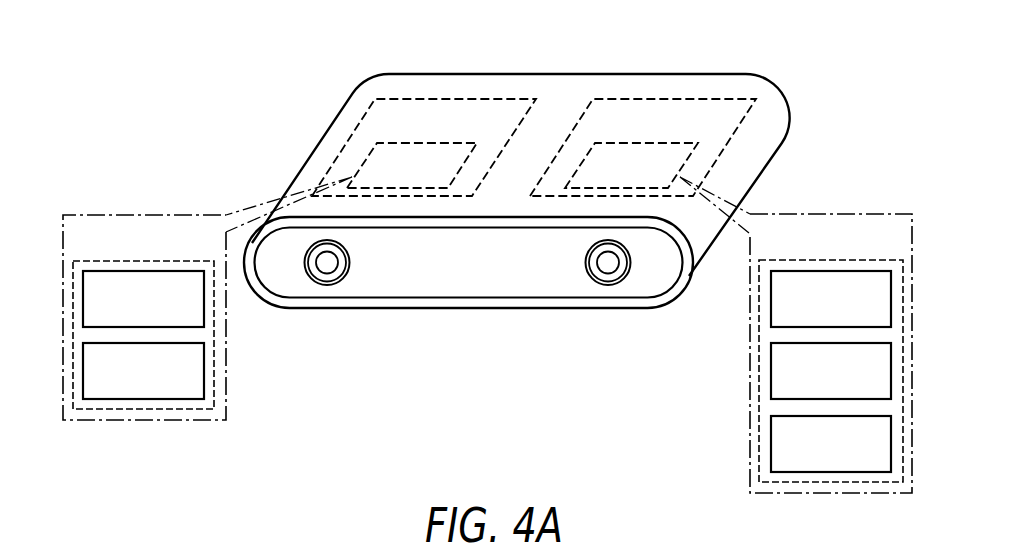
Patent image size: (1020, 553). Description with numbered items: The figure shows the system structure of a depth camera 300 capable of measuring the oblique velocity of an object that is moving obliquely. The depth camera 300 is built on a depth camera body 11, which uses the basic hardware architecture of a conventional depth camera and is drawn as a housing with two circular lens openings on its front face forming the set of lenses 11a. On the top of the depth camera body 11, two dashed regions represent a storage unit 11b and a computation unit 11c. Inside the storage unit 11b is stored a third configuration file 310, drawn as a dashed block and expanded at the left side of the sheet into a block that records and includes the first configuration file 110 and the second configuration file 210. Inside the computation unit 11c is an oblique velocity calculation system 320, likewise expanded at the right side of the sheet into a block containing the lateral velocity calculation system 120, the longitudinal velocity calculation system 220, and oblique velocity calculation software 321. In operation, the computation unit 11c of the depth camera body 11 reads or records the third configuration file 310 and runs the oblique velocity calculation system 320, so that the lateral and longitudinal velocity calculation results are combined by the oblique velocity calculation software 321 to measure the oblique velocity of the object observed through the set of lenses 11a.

The depth camera 300 is at (524, 159).
The depth camera body 11 is at (286, 122).
The set of lenses 11a is at (325, 266).
The storage unit 11b is at (454, 131).
The computation unit 11c is at (672, 131).
The third configuration file 310 is at (270, 281).
The oblique velocity calculation system 320 is at (738, 318).
The first configuration file 110 is at (121, 314).
The second configuration file 210 is at (121, 385).
The lateral velocity calculation system 120 is at (809, 314).
The longitudinal velocity calculation system 220 is at (809, 385).
The oblique velocity calculation software 321 is at (809, 458).